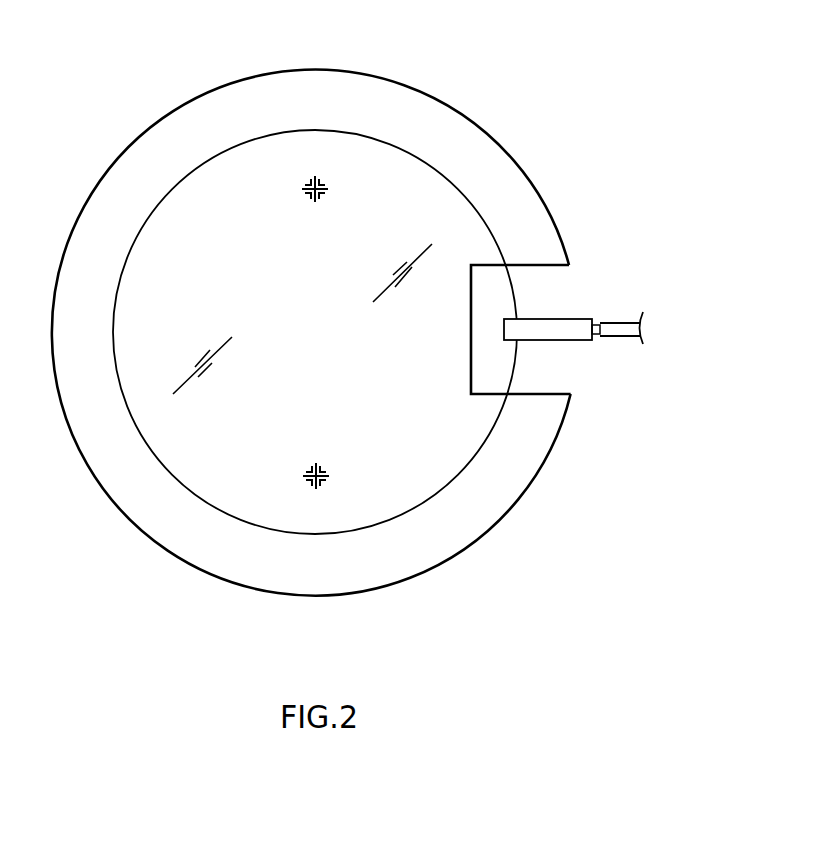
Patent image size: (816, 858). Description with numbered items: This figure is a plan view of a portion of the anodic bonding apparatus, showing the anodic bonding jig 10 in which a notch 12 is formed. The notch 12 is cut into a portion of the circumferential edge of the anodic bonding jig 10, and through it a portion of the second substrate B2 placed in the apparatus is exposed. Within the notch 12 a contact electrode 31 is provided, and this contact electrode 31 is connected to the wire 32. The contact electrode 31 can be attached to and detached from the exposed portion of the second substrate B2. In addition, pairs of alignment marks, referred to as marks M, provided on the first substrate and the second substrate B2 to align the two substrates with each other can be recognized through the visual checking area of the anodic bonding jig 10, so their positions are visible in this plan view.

The anodic bonding jig 10 is at (494, 131).
The notch 12 is at (557, 373).
The second substrate B2 is at (507, 295).
The contact electrode 31 is at (577, 336).
The wire 32 is at (622, 322).
The marks M is at (325, 176).